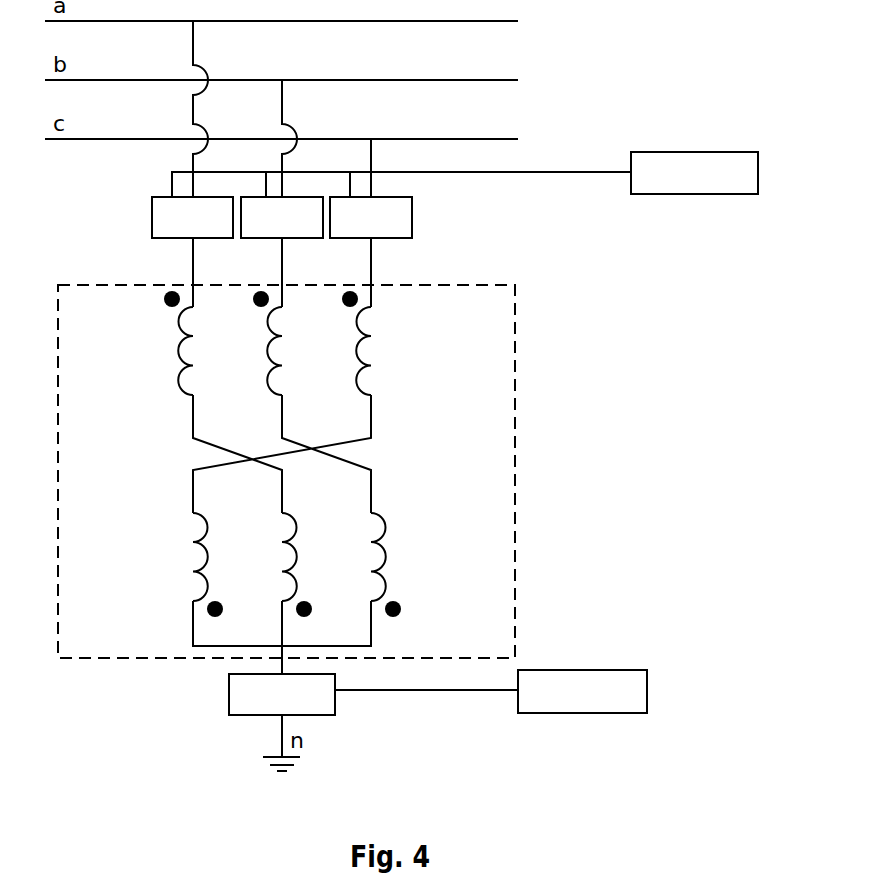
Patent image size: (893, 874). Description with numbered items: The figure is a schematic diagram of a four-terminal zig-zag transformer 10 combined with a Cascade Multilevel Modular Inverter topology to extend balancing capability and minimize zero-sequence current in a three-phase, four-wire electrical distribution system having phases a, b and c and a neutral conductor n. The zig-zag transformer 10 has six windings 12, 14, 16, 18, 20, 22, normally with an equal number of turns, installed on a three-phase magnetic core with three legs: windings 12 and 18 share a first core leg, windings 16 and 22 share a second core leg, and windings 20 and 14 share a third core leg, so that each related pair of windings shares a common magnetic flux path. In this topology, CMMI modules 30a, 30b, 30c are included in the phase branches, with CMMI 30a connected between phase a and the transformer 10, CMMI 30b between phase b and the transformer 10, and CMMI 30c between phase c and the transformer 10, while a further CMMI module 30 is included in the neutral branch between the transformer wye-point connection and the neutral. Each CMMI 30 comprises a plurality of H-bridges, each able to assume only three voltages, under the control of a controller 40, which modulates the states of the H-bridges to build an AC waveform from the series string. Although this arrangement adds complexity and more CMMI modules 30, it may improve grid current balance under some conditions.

The zig-zag transformer 10 is at (520, 452).
The winding 12 is at (176, 352).
The winding 14 is at (401, 557).
The winding 16 is at (265, 352).
The winding 18 is at (189, 557).
The winding 20 is at (373, 352).
The winding 22 is at (301, 557).
The CMMI module 30 is at (225, 695).
The CMMI 30a is at (148, 217).
The CMMI 30b is at (262, 242).
The CMMI 30c is at (418, 217).
The controller 40 is at (696, 198).